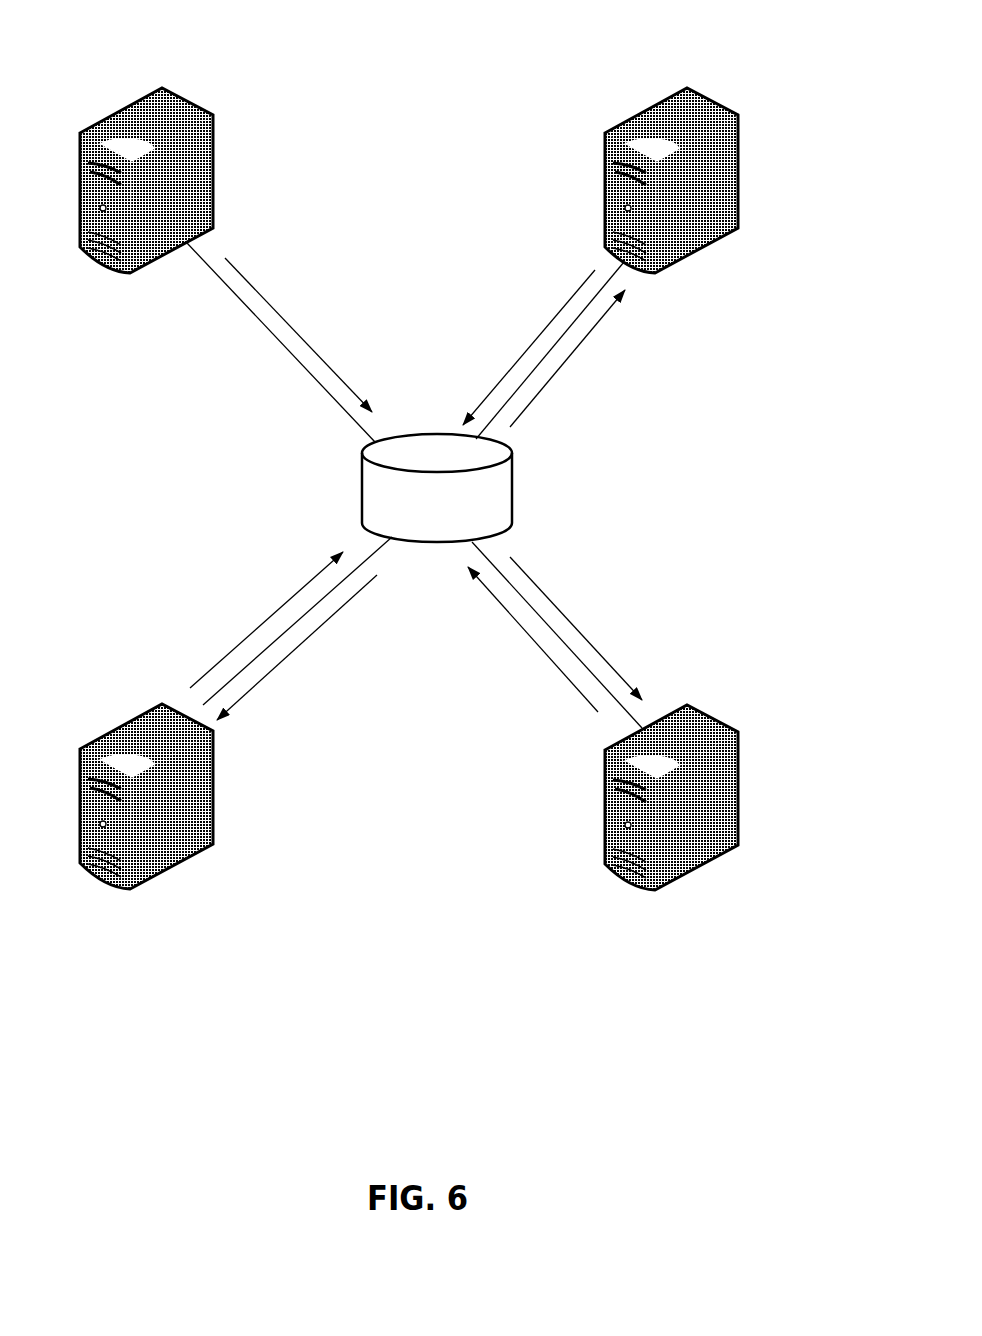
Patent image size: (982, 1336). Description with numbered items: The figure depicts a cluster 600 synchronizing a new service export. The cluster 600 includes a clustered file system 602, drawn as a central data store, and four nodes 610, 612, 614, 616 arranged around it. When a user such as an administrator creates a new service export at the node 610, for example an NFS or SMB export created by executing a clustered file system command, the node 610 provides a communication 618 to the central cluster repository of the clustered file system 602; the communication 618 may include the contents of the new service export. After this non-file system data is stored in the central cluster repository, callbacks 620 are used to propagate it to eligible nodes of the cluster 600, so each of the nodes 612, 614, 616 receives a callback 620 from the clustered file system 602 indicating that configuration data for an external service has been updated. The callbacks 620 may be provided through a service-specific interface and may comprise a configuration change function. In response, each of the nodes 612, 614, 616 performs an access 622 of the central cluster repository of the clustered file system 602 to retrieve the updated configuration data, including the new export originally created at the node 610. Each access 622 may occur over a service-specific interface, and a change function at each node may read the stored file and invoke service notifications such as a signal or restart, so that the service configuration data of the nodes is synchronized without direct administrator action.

The cluster 600 is at (633, 1045).
The clustered file system 602 is at (360, 493).
The node 610 is at (207, 112).
The node 612 is at (707, 248).
The node 614 is at (740, 833).
The node 616 is at (170, 870).
The communication 618 is at (257, 290).
The callback 620 is at (565, 365).
The access 622 is at (558, 312).